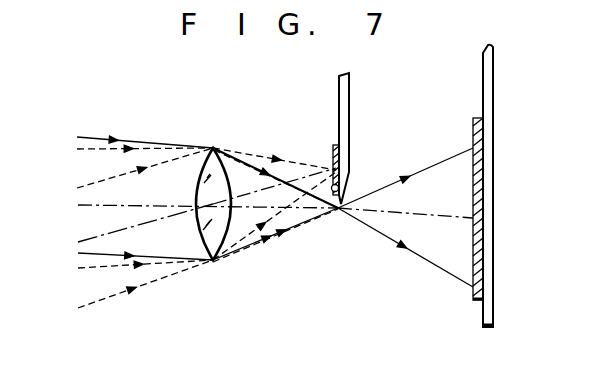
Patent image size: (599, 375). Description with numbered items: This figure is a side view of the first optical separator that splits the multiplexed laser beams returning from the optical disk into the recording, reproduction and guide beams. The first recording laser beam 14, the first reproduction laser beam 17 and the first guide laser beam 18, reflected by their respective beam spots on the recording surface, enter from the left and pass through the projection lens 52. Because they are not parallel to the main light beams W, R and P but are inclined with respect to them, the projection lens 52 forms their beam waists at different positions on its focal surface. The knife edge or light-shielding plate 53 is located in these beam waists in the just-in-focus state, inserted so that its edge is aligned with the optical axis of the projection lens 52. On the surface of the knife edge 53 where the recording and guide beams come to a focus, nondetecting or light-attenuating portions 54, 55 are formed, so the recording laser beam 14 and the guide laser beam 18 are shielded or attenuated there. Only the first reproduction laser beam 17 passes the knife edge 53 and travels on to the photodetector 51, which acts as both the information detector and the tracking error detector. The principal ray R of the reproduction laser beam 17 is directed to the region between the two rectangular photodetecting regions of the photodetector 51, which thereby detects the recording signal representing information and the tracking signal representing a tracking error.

The photodetector 51 is at (490, 92).
The projection lens 52 is at (204, 168).
The knife edge (light-shielding plate) 53 is at (346, 100).
The nondetecting portion (light-attenuating portion) 54 is at (334, 150).
The nondetecting portion (light-attenuating portion) 55 is at (338, 187).
The first recording laser beam 14 is at (80, 268).
The first reproduction laser beam 17 is at (78, 253).
The first guide laser beam 18 is at (105, 300).
The main light beam (principal ray) of the reproduction laser beam R is at (77, 188).
The main light beam of the recording laser beam W is at (78, 205).
The main light beam of the guide laser beam P is at (78, 242).